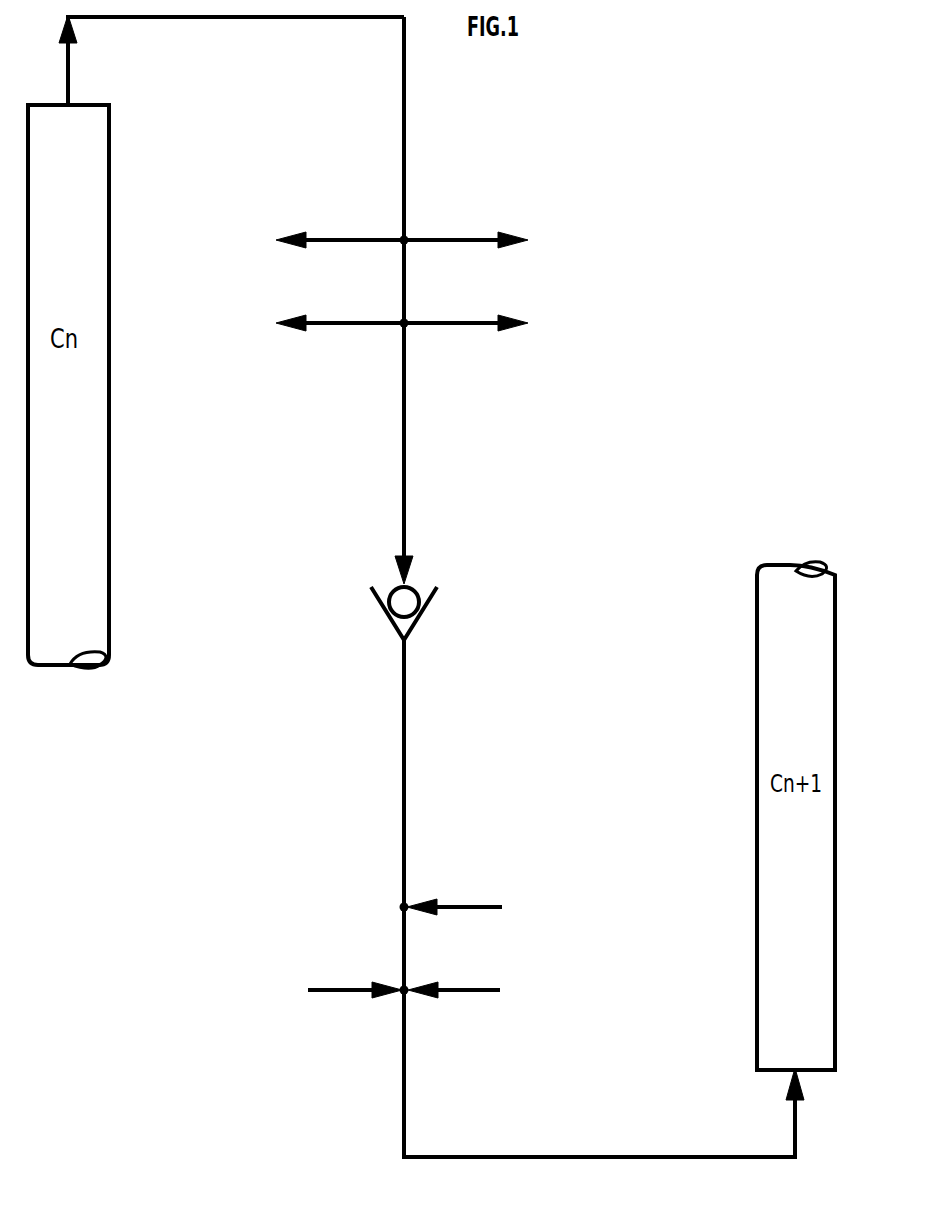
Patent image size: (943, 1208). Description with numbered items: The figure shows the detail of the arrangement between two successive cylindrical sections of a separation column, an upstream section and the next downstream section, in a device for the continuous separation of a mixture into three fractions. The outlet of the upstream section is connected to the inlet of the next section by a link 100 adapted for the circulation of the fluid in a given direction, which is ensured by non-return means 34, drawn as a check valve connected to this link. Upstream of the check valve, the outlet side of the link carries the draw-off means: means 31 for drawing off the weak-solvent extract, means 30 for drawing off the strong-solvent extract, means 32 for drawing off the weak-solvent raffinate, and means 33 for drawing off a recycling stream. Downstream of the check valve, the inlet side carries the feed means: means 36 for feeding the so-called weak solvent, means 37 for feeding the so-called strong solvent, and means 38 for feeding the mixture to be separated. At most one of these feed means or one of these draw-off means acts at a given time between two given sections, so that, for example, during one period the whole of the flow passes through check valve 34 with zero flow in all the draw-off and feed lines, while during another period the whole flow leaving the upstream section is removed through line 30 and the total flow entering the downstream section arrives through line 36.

The means for drawing off a solvent S2 extract E2 30 is at (356, 240).
The means for drawing off a solvent S1 extract E1 31 is at (452, 240).
The means for drawing off a solvent S1 raffinate R 32 is at (343, 323).
The means for drawing off a recycling stream 33 is at (472, 323).
The non-return means 34 is at (435, 602).
The means for feeding weak solvent S1 36 is at (457, 906).
The means for feeding strong solvent S2 37 is at (353, 992).
The means for feeding mixture 38 is at (455, 992).
The link 100 is at (403, 720).